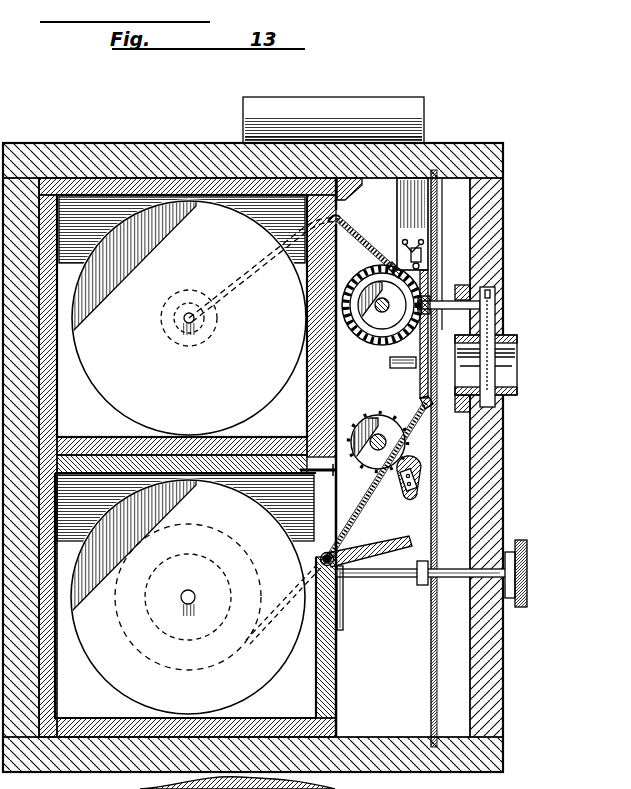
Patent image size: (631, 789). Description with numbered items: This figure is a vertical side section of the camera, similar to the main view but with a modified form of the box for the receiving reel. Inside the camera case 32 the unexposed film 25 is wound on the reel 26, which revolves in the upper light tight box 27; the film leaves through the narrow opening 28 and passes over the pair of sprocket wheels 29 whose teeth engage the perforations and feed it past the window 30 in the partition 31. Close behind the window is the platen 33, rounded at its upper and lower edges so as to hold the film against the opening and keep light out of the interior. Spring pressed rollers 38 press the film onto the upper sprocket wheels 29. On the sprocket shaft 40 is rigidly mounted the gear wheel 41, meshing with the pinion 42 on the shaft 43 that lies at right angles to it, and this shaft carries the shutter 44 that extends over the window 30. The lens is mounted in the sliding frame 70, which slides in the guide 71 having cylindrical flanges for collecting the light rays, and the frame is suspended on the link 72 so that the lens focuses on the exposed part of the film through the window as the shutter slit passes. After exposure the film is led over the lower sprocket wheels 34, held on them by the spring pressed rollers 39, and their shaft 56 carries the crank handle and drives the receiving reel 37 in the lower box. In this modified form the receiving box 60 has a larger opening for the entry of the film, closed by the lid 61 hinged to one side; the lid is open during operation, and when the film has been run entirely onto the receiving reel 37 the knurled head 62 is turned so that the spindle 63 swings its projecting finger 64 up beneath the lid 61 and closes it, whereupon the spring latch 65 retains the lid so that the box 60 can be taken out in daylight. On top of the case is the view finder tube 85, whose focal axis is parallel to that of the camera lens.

The tube 85 is at (370, 112).
The camera case 32 is at (460, 150).
The reel 26 is at (308, 232).
The narrow opening 28 is at (305, 235).
The unexposed film 25 is at (367, 235).
The gear wheel 41 is at (392, 256).
The shutter 44 is at (439, 240).
The partition 31 is at (441, 270).
The spring pressed rollers 38 is at (430, 292).
The shaft 43 is at (448, 309).
The pinion 42 is at (430, 312).
The link 72 is at (497, 322).
The sliding frame 70 is at (500, 363).
The guide 71 is at (500, 388).
The sprocket wheels 29 is at (370, 325).
The shaft 40 is at (380, 313).
The platen 33 is at (419, 365).
The window 30 is at (421, 386).
The shaft 56 is at (377, 433).
The sprocket wheels 34 is at (366, 455).
The light tight box 27 is at (280, 447).
The spring latch 65 is at (326, 479).
The lid 61 is at (375, 540).
The spring pressed rollers 39 is at (409, 491).
The projecting finger 64 is at (344, 618).
The spindle 63 is at (408, 579).
The knurled head 62 is at (522, 543).
The receiving box 60 is at (338, 677).
The receiving reel 37 is at (262, 667).